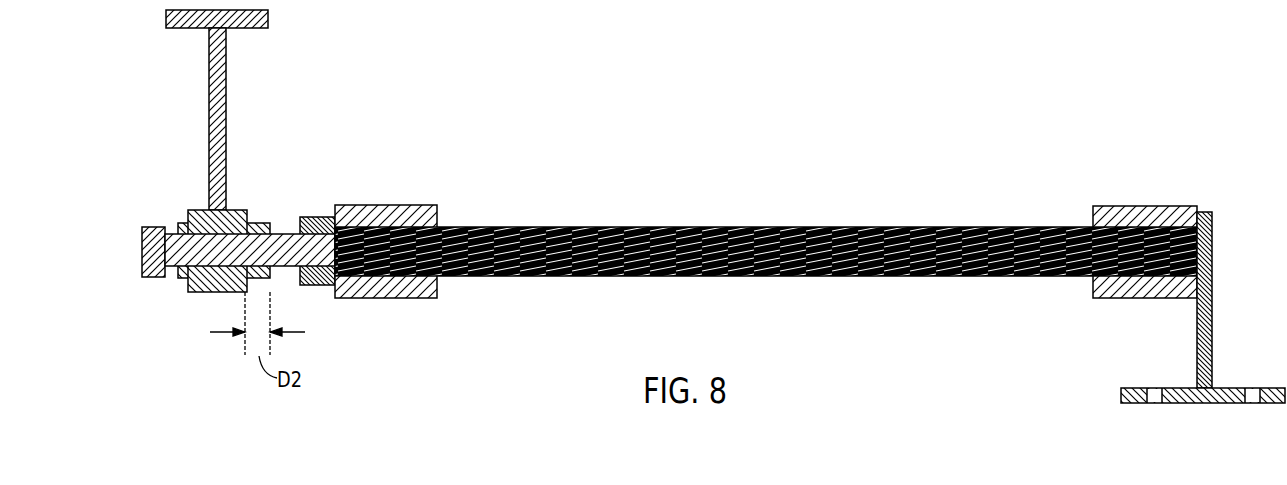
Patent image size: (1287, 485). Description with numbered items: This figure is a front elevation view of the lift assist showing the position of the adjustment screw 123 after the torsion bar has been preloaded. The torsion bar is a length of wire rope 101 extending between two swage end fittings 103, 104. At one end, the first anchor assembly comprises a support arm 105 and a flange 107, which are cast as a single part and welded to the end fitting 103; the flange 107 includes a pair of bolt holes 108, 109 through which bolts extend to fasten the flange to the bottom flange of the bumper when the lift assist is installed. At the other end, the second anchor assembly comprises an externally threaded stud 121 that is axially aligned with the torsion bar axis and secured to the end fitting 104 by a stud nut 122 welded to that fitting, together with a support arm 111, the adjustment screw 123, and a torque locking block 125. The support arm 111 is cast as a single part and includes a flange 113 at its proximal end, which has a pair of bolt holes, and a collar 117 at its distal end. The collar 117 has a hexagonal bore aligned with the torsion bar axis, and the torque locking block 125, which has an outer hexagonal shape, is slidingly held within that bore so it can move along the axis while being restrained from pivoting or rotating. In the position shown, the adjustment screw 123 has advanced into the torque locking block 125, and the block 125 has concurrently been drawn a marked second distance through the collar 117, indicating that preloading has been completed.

The wire rope 101 is at (705, 228).
The swage end fitting 103 is at (1133, 205).
The swage end fitting 104 is at (367, 205).
The support arm 105 is at (1213, 312).
The flange 107 is at (1127, 388).
The bolt hole 108 is at (1155, 388).
The bolt hole 109 is at (1253, 388).
The support arm 111 is at (209, 113).
The flange 113 is at (255, 30).
The collar 117 is at (189, 210).
The externally threaded stud 121 is at (286, 230).
The stud nut 122 is at (321, 217).
The adjustment screw 123 is at (180, 268).
The torque locking block 125 is at (184, 222).